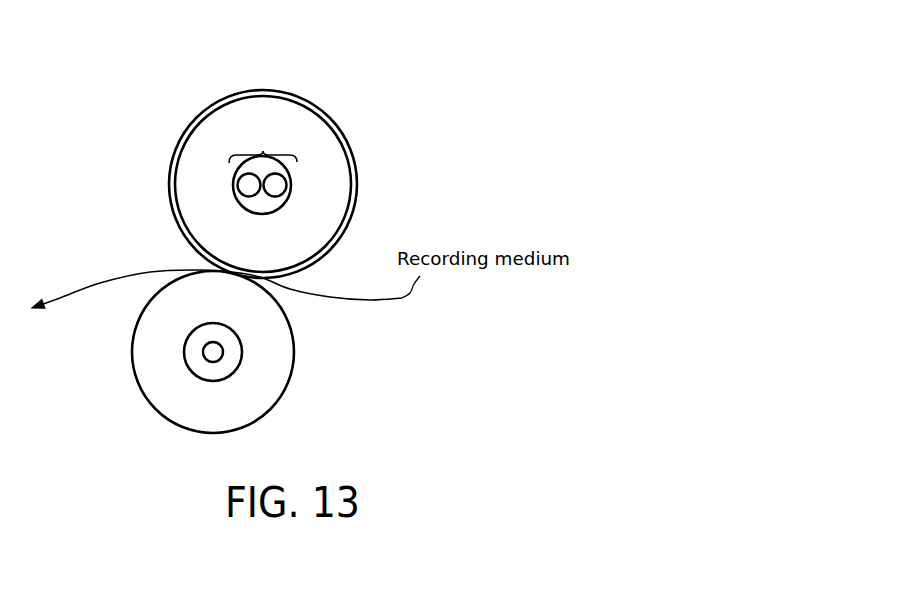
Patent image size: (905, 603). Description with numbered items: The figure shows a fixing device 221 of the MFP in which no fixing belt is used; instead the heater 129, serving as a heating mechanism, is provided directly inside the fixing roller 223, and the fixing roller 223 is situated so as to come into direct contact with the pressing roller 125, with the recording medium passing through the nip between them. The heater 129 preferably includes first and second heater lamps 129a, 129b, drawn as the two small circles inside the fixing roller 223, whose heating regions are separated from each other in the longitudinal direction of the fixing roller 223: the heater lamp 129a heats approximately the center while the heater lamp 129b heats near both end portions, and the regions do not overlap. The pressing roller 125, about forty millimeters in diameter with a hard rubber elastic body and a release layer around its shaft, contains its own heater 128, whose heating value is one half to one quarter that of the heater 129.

The fixing device 221 is at (384, 62).
The fixing roller 223 is at (176, 158).
The heater 129 is at (263, 152).
The first heater lamp 129a is at (279, 200).
The second heater lamp 129b is at (242, 196).
The pressing roller 125 is at (139, 357).
The heater 128 is at (223, 352).